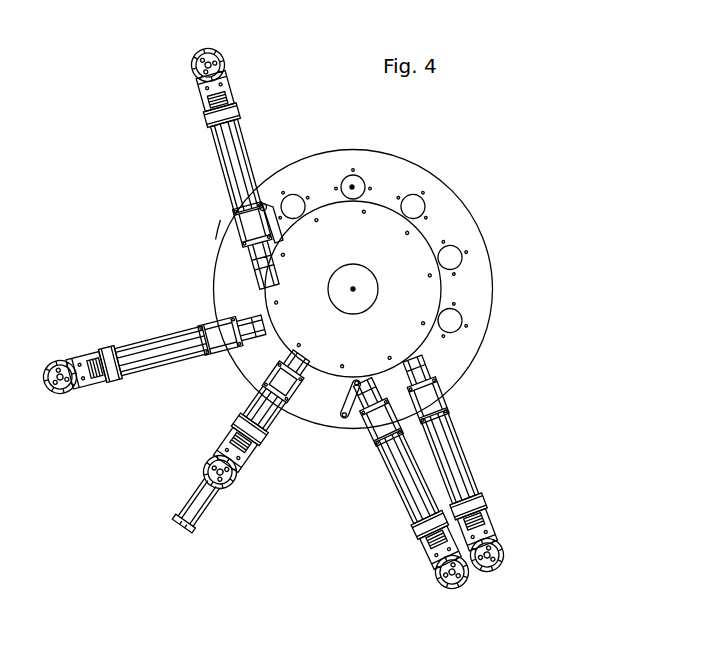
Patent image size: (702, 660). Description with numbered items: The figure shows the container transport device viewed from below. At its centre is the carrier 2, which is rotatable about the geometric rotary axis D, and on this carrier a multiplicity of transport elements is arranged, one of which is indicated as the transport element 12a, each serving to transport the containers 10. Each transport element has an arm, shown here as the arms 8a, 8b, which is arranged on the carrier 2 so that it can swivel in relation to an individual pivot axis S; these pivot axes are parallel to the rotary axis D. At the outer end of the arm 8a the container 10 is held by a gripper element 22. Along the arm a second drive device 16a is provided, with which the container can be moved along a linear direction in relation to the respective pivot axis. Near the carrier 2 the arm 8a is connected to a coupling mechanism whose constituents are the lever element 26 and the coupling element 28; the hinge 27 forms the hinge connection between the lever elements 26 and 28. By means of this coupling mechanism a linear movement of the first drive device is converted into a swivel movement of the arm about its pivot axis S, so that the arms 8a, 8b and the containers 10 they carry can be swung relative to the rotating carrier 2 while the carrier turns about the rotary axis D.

The carrier 2 is at (472, 287).
The arm 8a is at (202, 163).
The arm 8b is at (160, 338).
The container 10 is at (193, 68).
The transport element 12a is at (217, 243).
The second drive device 16a is at (240, 127).
The gripper element 22 is at (205, 98).
The lever element 26 is at (274, 222).
The hinge 27 is at (265, 203).
The coupling element 28 is at (254, 203).
The pivot axis S is at (352, 187).
The rotary axis D is at (353, 289).